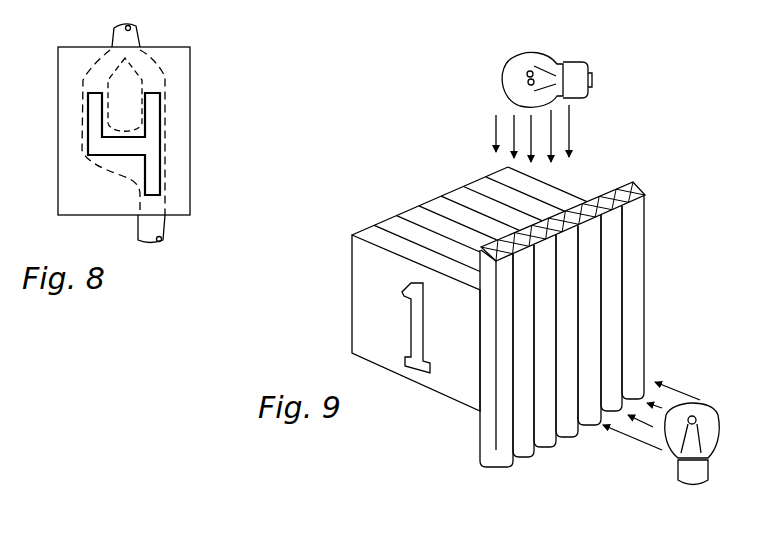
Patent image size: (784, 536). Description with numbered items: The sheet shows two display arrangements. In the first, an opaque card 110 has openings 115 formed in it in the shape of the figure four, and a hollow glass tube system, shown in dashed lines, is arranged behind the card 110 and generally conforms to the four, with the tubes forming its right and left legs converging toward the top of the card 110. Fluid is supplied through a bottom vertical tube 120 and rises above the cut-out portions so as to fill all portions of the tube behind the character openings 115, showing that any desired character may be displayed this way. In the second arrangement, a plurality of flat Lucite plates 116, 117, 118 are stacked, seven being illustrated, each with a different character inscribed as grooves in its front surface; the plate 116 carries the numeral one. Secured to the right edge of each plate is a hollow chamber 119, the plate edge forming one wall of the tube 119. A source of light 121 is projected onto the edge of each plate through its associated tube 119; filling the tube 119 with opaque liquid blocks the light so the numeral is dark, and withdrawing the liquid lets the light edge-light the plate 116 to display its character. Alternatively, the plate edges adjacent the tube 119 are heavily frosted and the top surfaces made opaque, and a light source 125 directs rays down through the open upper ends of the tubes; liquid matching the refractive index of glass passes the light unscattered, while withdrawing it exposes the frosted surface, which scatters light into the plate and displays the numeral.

In FIG. 8, the card 110 is at (181, 73).
In FIG. 8, the openings 115 is at (152, 148).
In FIG. 8, the bottom vertical tube 120 is at (165, 230).
In FIG. 9, the flat Lucite plate 116 is at (368, 232).
In FIG. 9, the flat Lucite plate 117 is at (387, 218).
In FIG. 9, the flat Lucite plate 118 is at (406, 210).
In FIG. 9, the hollow chamber 119 is at (488, 442).
In FIG. 9, the source of light 121 is at (680, 473).
In FIG. 9, the light source 125 is at (509, 80).